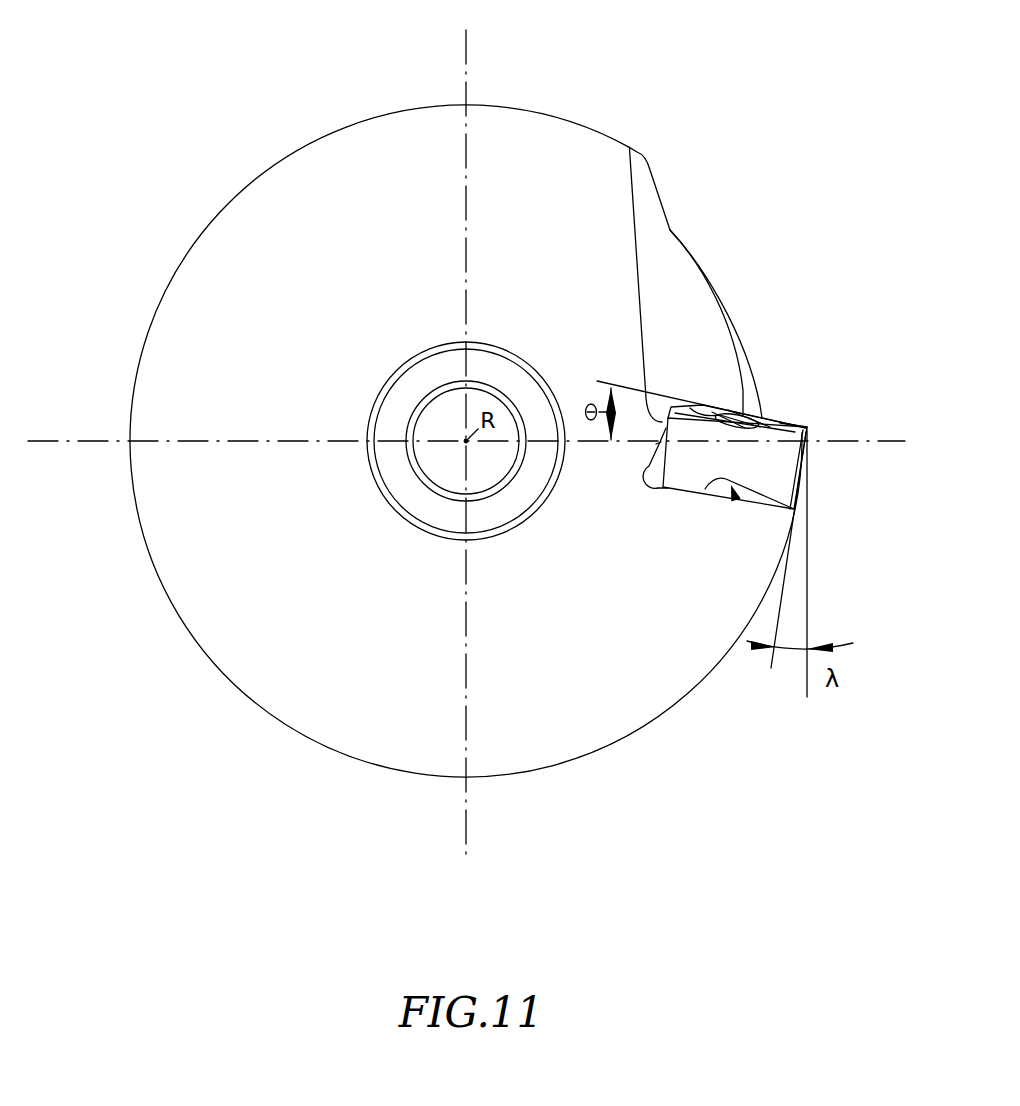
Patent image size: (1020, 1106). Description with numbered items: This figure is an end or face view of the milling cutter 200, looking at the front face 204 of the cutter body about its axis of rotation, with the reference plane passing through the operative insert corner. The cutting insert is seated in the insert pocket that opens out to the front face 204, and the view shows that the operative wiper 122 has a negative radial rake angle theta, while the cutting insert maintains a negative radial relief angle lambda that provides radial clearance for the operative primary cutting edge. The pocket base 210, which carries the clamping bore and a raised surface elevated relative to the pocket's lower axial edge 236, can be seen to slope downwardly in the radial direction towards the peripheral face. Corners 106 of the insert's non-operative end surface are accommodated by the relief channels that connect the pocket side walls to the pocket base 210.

The milling cutter 200 is at (668, 64).
The front face 204 is at (263, 223).
The corners 106 is at (812, 440).
The operative wiper 122 is at (799, 430).
The lower axial edge 236 is at (708, 482).
The pocket base 210 is at (736, 500).